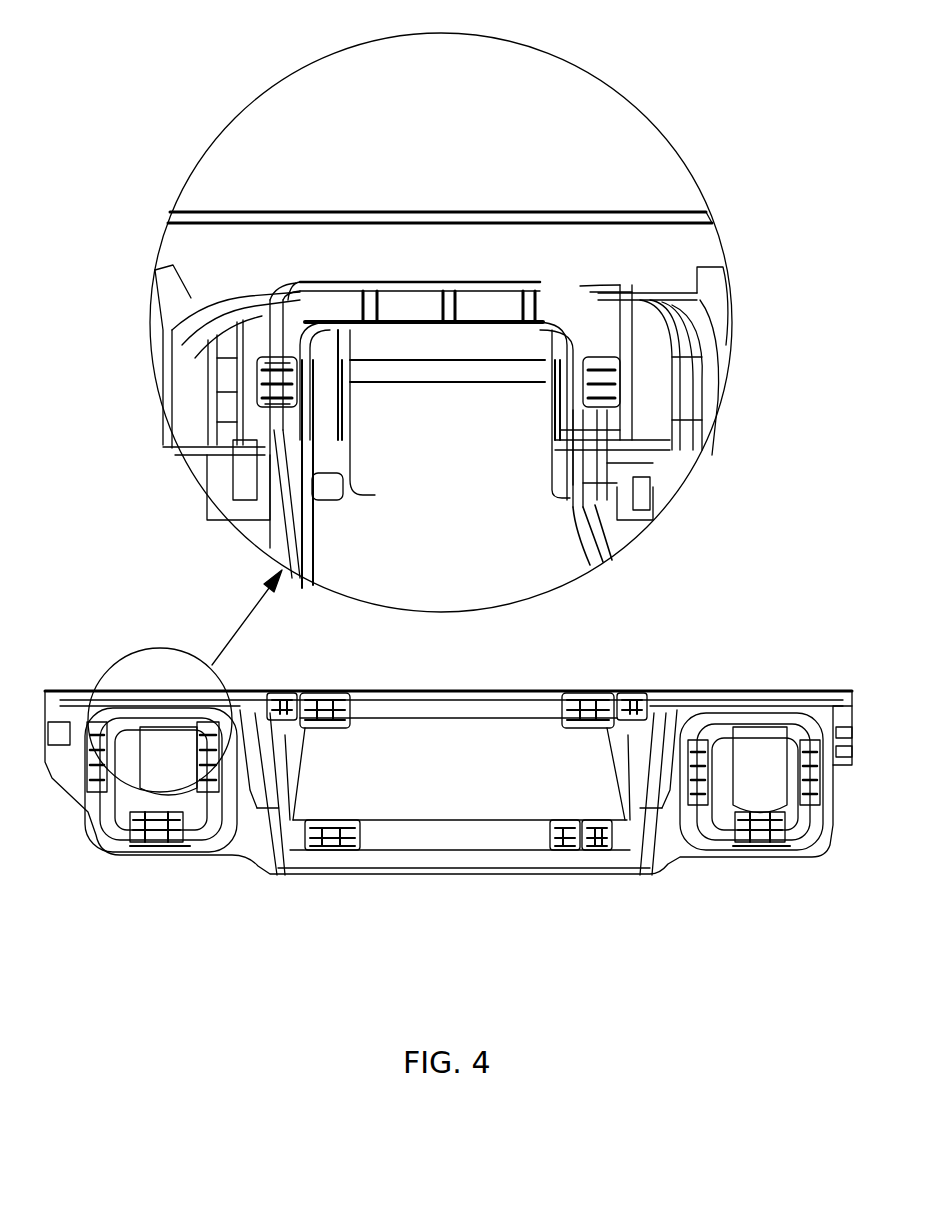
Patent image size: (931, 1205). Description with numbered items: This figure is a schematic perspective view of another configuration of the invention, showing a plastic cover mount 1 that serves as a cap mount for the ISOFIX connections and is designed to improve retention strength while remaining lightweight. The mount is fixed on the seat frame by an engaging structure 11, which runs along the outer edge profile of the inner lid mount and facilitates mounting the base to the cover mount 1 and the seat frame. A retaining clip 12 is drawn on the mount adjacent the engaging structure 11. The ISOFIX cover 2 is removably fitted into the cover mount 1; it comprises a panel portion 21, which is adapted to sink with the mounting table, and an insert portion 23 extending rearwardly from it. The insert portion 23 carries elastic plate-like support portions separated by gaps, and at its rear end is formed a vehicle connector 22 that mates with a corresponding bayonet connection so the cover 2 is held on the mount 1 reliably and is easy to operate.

The cover mount 1 is at (418, 805).
The ISOFIX cover 2 is at (757, 770).
The engaging structure 11 is at (592, 850).
The retaining clip 12 is at (557, 850).
The panel portion 21 is at (432, 572).
The vehicle connector 22 is at (255, 395).
The insert portion 23 is at (620, 532).